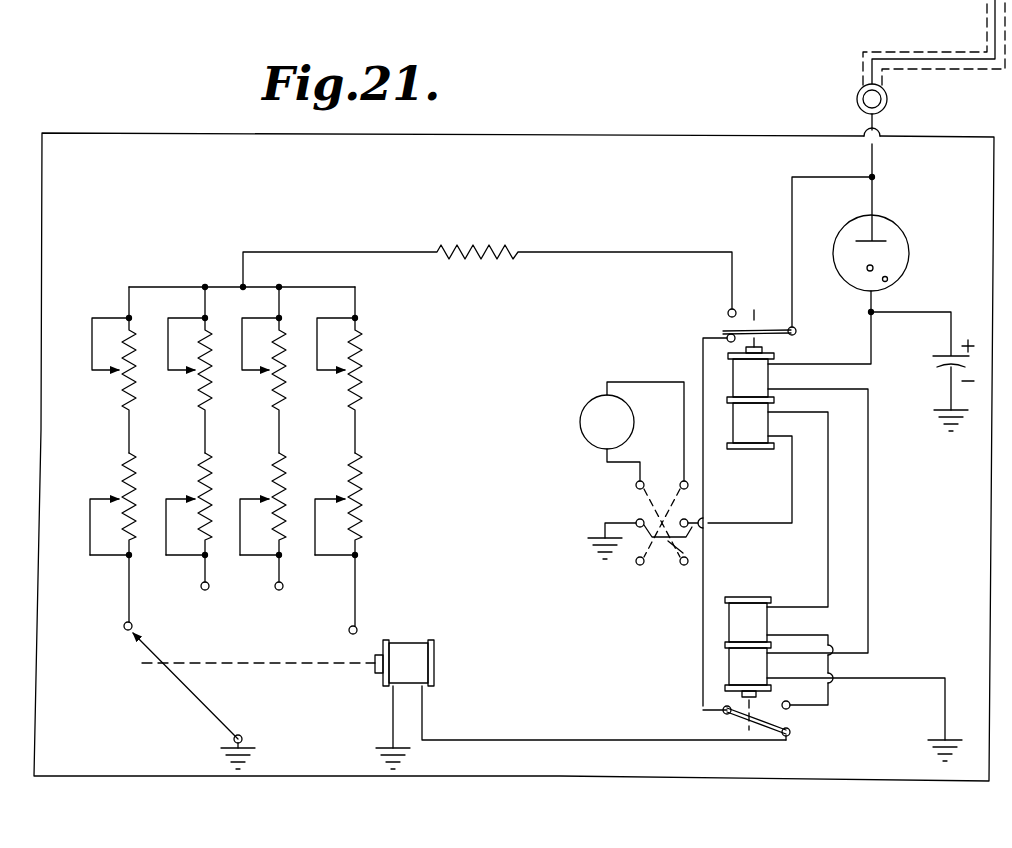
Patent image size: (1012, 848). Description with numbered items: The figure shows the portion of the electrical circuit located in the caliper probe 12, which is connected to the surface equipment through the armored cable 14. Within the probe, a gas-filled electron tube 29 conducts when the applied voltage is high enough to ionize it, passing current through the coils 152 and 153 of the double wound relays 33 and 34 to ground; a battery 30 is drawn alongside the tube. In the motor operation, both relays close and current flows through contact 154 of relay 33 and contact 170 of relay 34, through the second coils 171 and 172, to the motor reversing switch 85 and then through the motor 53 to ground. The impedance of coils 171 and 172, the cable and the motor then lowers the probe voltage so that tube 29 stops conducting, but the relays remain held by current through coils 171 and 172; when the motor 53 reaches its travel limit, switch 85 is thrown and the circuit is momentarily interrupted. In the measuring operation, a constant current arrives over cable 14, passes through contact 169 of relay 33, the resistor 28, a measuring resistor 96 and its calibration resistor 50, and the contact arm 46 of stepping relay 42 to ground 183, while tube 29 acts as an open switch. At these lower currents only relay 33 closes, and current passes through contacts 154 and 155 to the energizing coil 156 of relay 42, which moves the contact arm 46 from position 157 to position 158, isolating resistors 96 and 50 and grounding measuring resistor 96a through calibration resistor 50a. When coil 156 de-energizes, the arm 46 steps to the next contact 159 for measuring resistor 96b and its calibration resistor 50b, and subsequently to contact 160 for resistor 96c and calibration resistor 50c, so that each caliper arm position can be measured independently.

The caliper probe 12 is at (568, 135).
The armored cable 14 is at (938, 76).
The resistor 28 is at (478, 250).
The gas-filled electron tube 29 is at (897, 236).
The battery 30 is at (943, 368).
The double wound relay 33 is at (742, 399).
The double wound relay 34 is at (707, 663).
The stepping relay 42 is at (372, 676).
The contact arm 46 is at (175, 680).
The calibration resistor 50 is at (118, 485).
The calibration resistor 50a is at (204, 470).
The calibration resistor 50b is at (278, 470).
The calibration resistor 50c is at (350, 472).
The motor 53 is at (596, 412).
The motor reversing switch 85 is at (650, 516).
The measuring resistor 96 is at (115, 380).
The measuring resistor 96a is at (192, 378).
The measuring resistor 96b is at (268, 378).
The measuring resistor 96c is at (342, 378).
The coil 152 is at (757, 379).
The coil 153 is at (745, 666).
The contact 154 is at (722, 330).
The contact 155 is at (790, 734).
The energizing coil 156 is at (418, 660).
The contact position 157 is at (120, 624).
The contact position 158 is at (226, 594).
The contact 159 is at (272, 588).
The contact terminal 160 is at (358, 630).
The contact 169 is at (726, 310).
The contact 170 is at (790, 706).
The second coil 171 is at (748, 626).
The second coil 172 is at (756, 452).
The ground 183 is at (218, 752).